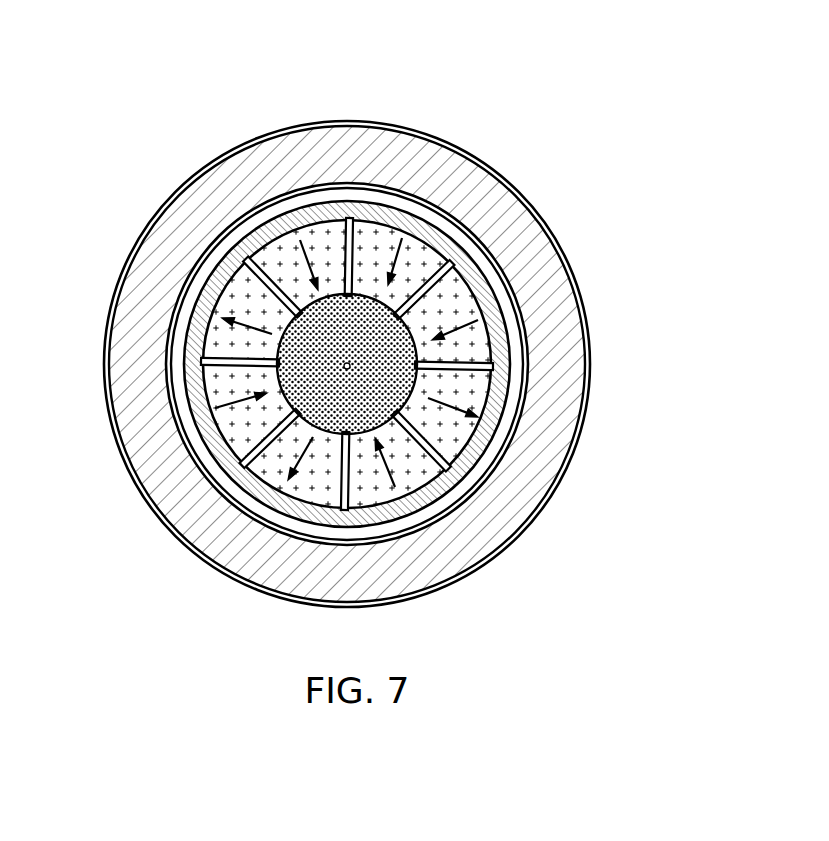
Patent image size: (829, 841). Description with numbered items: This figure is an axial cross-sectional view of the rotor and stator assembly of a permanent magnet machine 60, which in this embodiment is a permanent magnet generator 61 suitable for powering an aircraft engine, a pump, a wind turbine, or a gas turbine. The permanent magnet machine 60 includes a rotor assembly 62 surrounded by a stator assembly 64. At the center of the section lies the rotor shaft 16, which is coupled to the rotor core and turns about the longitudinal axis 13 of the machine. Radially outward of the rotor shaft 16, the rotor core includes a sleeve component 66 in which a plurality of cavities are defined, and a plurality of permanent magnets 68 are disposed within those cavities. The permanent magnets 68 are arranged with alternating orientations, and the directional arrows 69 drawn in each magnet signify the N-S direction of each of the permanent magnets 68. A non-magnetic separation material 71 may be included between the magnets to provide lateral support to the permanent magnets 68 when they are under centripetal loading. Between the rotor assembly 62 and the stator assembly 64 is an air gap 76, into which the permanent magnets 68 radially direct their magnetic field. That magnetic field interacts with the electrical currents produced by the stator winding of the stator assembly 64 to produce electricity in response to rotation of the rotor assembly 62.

The permanent magnet machine 60 is at (233, 72).
The permanent magnet generator 61 is at (635, 325).
The stator assembly 64 is at (524, 196).
The non-magnetic separation material 71 is at (197, 250).
The rotor assembly 62 is at (508, 303).
The sleeve component 66 is at (328, 197).
The air gap 76 is at (255, 243).
The directional arrows 69 is at (275, 295).
The permanent magnets 68 is at (265, 282).
The rotor shaft 16 is at (334, 409).
The longitudinal axis 13 is at (343, 363).